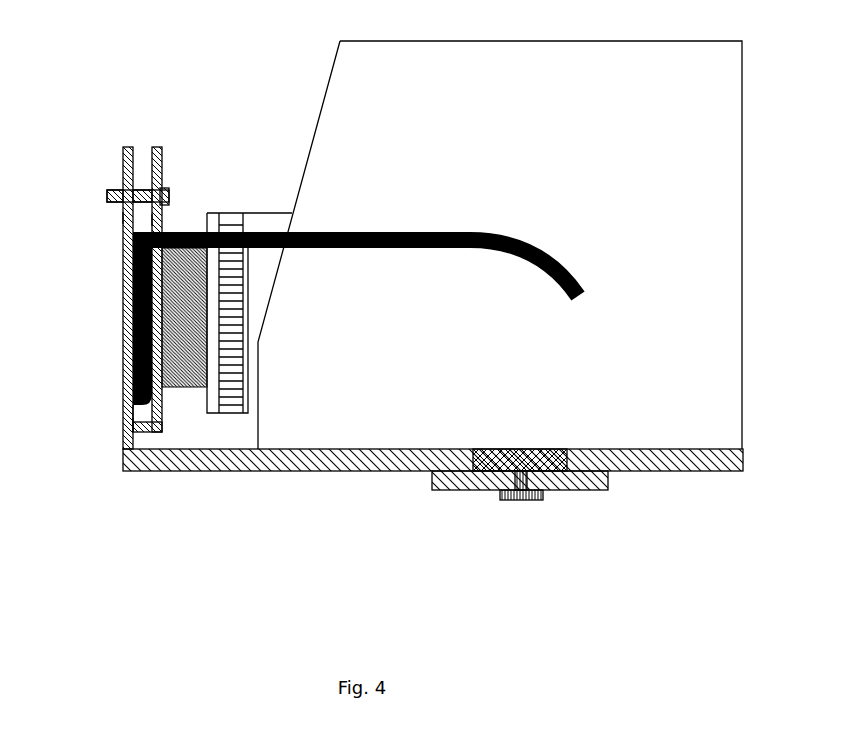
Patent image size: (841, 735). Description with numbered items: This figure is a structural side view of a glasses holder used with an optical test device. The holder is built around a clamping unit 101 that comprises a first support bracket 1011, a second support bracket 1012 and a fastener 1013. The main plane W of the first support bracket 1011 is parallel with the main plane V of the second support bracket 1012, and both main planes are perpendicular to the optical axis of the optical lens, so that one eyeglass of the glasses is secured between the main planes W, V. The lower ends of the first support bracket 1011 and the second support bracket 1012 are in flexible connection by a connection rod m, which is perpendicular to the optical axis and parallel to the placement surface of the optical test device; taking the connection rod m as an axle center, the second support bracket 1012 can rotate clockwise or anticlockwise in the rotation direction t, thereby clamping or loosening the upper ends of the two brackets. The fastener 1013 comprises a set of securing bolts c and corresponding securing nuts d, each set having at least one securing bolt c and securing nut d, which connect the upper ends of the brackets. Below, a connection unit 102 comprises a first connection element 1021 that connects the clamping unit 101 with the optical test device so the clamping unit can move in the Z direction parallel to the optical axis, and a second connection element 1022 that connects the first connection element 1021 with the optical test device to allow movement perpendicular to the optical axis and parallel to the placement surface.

The clamping unit 101 is at (82, 298).
The first support bracket 1011 is at (121, 387).
The second support bracket 1012 is at (157, 413).
The fastener 1013 is at (112, 110).
The connection unit 102 is at (433, 513).
The first connection element 1021 is at (340, 518).
The second connection element 1022 is at (520, 499).
The securing nut d is at (118, 187).
The securing bolt c is at (143, 188).
The main plane of the first support bracket W is at (119, 217).
The main plane of the second support bracket V is at (150, 220).
The connection rod m is at (125, 424).
The rotation direction t is at (167, 447).
The Z direction Z is at (184, 508).